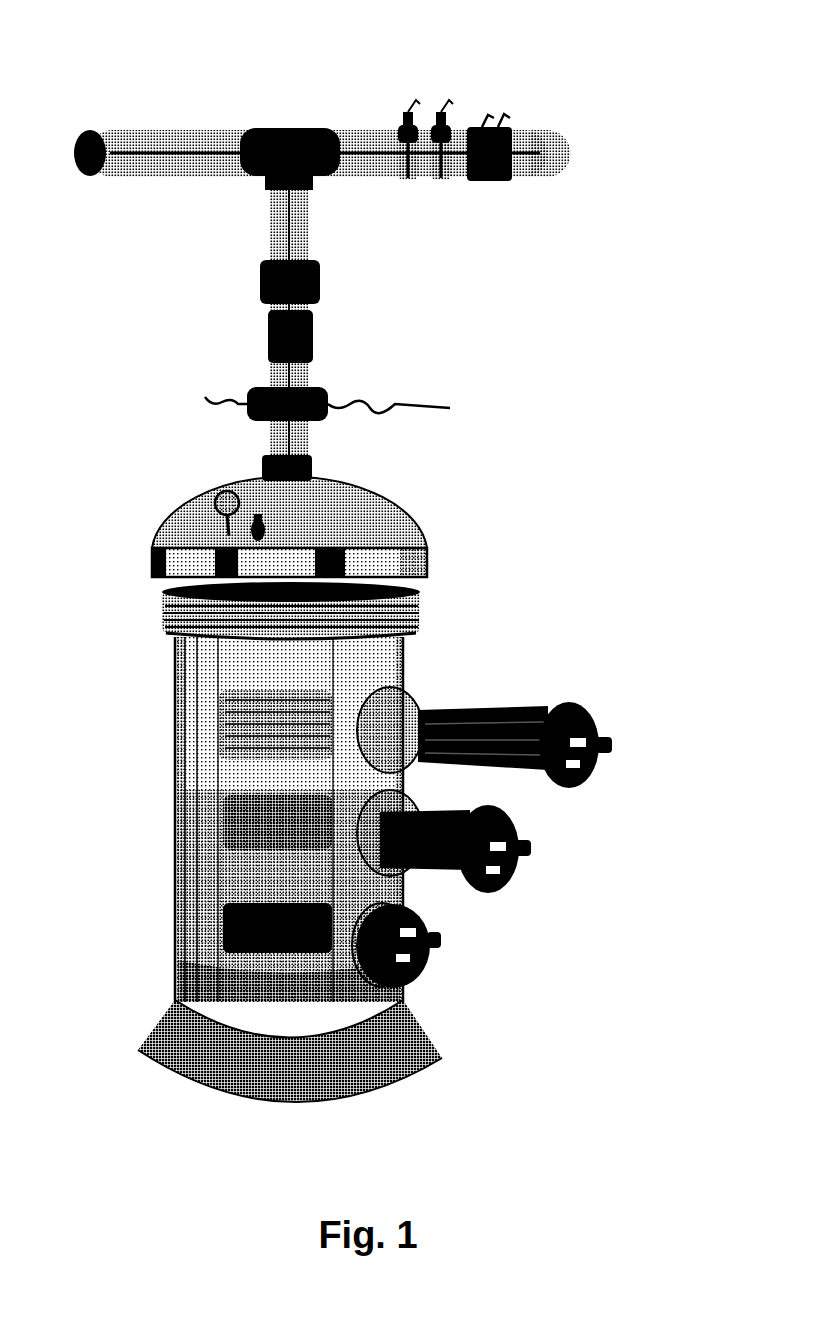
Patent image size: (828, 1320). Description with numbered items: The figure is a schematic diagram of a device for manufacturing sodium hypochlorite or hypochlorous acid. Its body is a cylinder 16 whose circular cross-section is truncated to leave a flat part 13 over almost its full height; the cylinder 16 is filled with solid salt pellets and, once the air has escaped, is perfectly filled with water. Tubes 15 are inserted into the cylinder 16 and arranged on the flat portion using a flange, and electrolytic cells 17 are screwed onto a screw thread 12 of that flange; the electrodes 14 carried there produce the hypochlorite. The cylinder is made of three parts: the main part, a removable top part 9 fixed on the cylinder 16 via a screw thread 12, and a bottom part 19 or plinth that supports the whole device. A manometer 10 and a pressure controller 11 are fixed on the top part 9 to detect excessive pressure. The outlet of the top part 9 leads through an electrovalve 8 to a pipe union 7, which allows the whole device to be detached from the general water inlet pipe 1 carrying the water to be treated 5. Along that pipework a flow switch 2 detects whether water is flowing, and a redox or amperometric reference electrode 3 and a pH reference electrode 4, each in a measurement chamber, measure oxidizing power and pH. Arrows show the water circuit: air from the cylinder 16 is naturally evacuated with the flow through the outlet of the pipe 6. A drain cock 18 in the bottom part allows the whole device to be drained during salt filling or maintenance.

The general water inlet pipe 1 is at (570, 153).
The flow switch 2 is at (493, 90).
The redox or amperometric reference electrode 3 is at (441, 92).
The pH reference electrode 4 is at (405, 92).
The water to be treated 5 is at (298, 128).
The outlet of the pipe 6 is at (78, 153).
The pipe union 7 is at (335, 298).
The electrovalve 8 is at (342, 385).
The removable top part 9 is at (385, 500).
The manometer 10 is at (180, 510).
The pressure controller 11 is at (162, 536).
The screw thread 12 is at (428, 602).
The flat part 13 is at (386, 660).
The electrodes 14 is at (496, 706).
The tubes 15 is at (212, 708).
The cylinder 16 is at (168, 865).
The electrolytic cells 17 is at (604, 722).
The drain cock 18 is at (422, 1025).
The bottom part 19 is at (413, 1078).